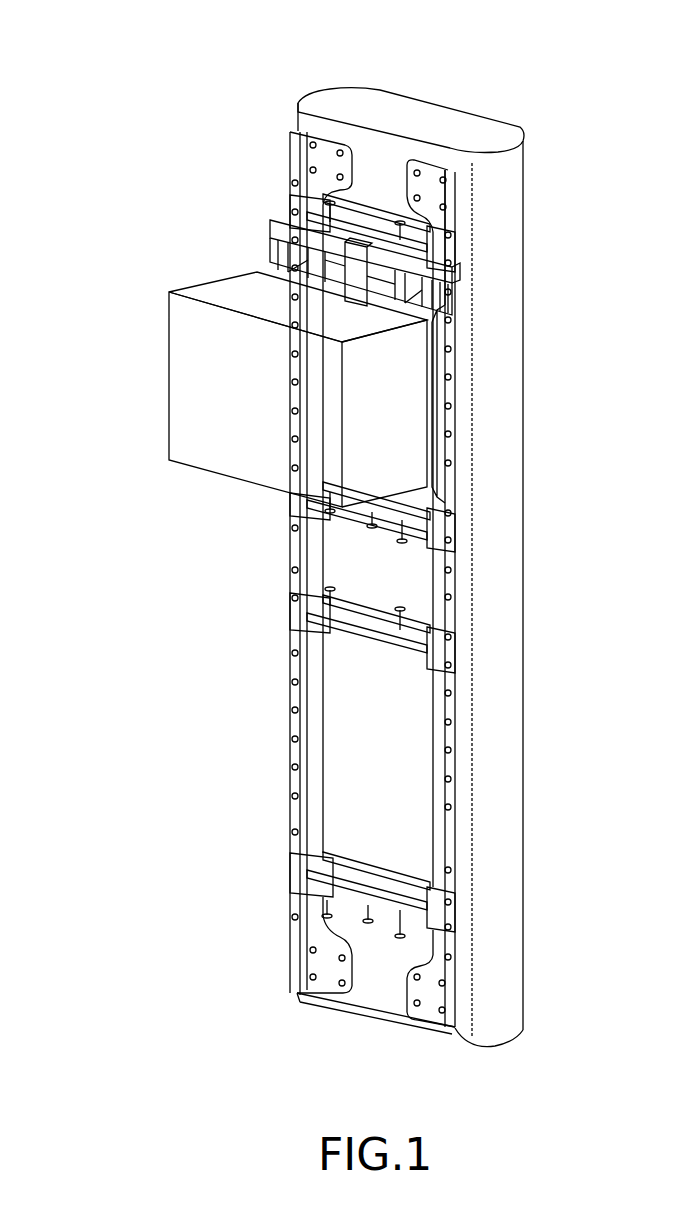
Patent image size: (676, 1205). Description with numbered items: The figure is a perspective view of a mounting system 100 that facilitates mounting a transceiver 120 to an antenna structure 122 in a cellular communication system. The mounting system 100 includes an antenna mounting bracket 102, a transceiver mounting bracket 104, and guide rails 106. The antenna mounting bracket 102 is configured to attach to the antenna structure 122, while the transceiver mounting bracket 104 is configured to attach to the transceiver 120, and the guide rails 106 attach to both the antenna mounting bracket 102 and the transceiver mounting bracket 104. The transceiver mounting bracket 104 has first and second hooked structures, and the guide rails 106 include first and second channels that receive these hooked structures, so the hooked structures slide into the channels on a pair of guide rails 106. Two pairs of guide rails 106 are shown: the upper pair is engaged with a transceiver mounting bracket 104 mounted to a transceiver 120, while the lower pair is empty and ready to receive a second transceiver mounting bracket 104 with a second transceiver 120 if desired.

The mounting system 100 is at (103, 570).
The antenna mounting bracket 102 is at (451, 178).
The transceiver mounting bracket 104 is at (453, 277).
The guide rails 106 is at (451, 237).
The transceiver 120 is at (408, 122).
The antenna structure 122 is at (183, 338).